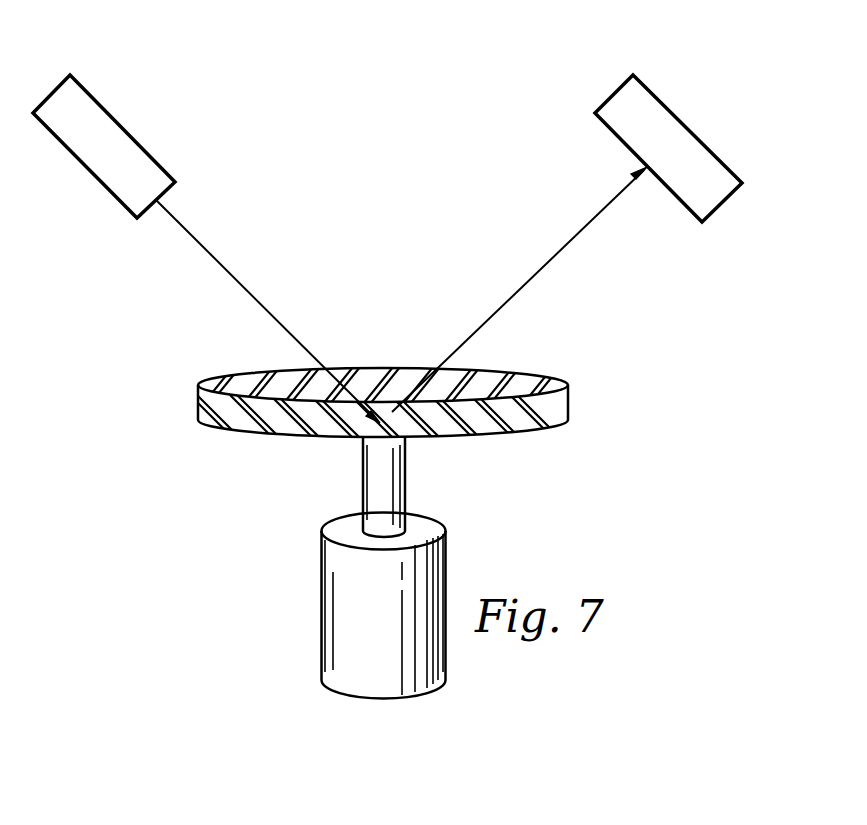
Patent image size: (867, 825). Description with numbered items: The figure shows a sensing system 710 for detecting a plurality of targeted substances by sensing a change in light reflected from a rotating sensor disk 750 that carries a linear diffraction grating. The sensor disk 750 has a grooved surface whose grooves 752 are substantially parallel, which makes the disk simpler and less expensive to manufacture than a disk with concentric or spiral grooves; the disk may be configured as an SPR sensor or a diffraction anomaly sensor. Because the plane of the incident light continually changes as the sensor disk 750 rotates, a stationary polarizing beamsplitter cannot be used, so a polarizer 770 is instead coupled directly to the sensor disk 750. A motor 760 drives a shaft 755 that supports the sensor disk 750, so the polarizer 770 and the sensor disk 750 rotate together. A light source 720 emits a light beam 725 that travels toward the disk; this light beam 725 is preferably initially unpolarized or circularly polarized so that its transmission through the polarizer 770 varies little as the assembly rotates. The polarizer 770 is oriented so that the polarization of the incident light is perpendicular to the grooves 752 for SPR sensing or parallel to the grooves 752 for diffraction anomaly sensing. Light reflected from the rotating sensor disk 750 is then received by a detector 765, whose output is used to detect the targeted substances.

The sensing system 710 is at (532, 98).
The light source 720 is at (129, 160).
The light beam 725 is at (222, 260).
The sensor disk 750 is at (538, 431).
The grooves 752 is at (208, 418).
The shaft 755 is at (362, 473).
The motor 760 is at (322, 602).
The detector 765 is at (697, 164).
The polarizer 770 is at (535, 371).